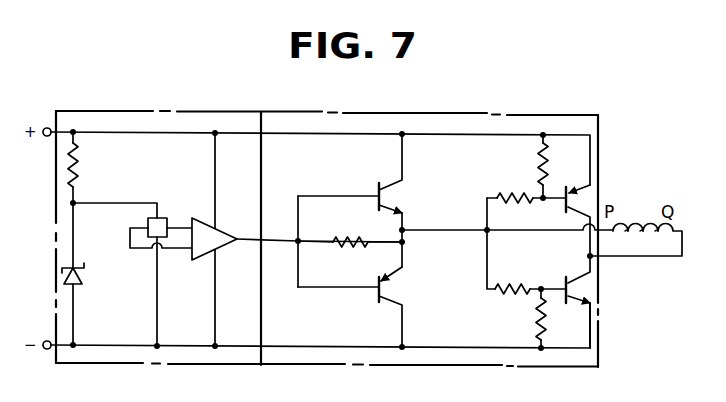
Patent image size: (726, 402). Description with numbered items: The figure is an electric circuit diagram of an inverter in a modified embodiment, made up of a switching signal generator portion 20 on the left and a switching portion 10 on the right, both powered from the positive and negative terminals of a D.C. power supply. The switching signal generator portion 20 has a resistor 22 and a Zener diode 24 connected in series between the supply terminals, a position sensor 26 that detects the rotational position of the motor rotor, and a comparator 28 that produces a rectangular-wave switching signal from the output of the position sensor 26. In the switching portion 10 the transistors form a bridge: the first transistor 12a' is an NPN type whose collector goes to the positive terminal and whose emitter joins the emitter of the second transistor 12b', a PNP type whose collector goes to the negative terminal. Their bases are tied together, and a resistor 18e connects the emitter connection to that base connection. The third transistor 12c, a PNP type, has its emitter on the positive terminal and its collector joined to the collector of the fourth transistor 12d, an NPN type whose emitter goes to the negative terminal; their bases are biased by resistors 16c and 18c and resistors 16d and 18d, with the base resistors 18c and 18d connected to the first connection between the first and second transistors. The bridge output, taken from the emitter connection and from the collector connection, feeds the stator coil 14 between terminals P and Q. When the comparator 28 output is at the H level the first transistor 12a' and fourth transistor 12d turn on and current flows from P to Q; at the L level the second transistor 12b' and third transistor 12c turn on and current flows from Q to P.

The switching portion 10 is at (466, 115).
The switching signal generator portion 20 is at (167, 111).
The resistor 22 is at (80, 169).
The Zener diode 24 is at (85, 273).
The position sensor 26 is at (160, 225).
The comparator 28 is at (220, 243).
The first transistor 12a' is at (375, 188).
The second transistor 12b' is at (375, 294).
The resistor 18e is at (342, 247).
The resistor 16c is at (541, 166).
The base resistor 18c is at (518, 200).
The third transistor 12c is at (585, 195).
The base resistor 18d is at (512, 283).
The resistor 16d is at (540, 320).
The fourth transistor 12d is at (577, 289).
The stator coil 14 is at (645, 213).